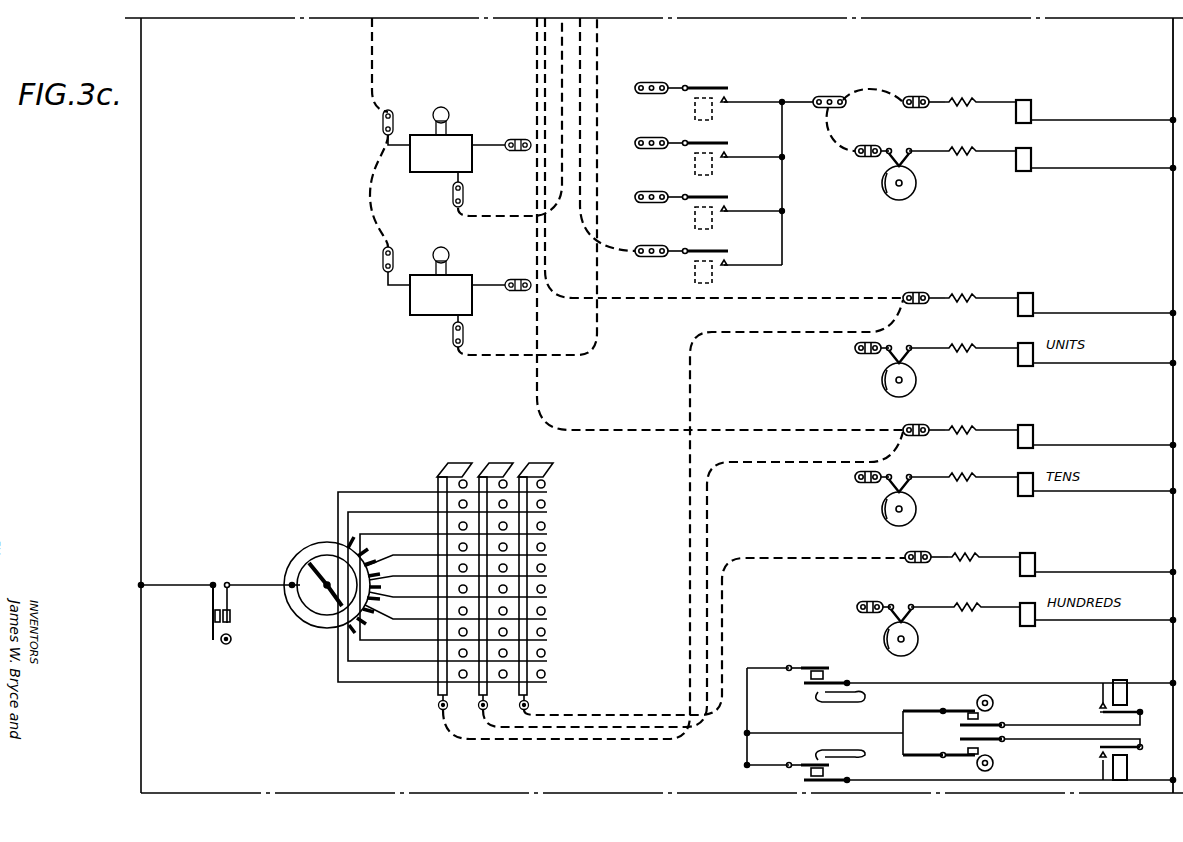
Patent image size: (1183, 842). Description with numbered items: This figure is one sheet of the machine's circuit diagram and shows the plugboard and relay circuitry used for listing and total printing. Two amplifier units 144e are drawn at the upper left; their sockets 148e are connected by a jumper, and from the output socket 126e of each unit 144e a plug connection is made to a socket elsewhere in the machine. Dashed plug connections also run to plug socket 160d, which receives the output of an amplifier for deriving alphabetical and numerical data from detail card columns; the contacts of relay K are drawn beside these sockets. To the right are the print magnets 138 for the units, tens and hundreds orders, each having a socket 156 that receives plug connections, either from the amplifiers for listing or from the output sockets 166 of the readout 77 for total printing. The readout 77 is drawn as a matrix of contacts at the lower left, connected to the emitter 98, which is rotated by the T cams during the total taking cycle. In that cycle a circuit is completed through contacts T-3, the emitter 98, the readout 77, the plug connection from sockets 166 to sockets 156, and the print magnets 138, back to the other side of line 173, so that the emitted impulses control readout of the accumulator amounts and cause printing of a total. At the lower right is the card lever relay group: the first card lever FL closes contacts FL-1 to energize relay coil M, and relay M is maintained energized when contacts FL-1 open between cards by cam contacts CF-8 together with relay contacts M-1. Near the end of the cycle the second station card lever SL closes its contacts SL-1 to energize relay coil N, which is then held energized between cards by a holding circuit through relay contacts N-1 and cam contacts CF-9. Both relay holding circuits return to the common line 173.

The socket 148e is at (383, 118).
The amplifier unit 144e is at (459, 211).
The output socket 126e is at (453, 196).
The plug socket 160d is at (650, 246).
The relay K is at (695, 275).
The line 173 is at (1173, 228).
The socket 156 is at (916, 294).
The print magnet 138 is at (1030, 306).
The emitter 98 is at (303, 551).
The contacts T-3 is at (213, 606).
The readout 77 is at (459, 581).
The output socket 166 is at (530, 704).
The contacts FL-1 is at (805, 668).
The first card lever FL is at (835, 706).
The second station card lever SL is at (815, 748).
The contacts SL-1 is at (805, 772).
The cam contacts CF-8 is at (985, 717).
The cam contacts CF-9 is at (985, 750).
The relay contacts M-1 is at (1098, 708).
The relay coil M is at (1127, 690).
The relay contacts N-1 is at (1098, 750).
The relay coil N is at (1127, 766).